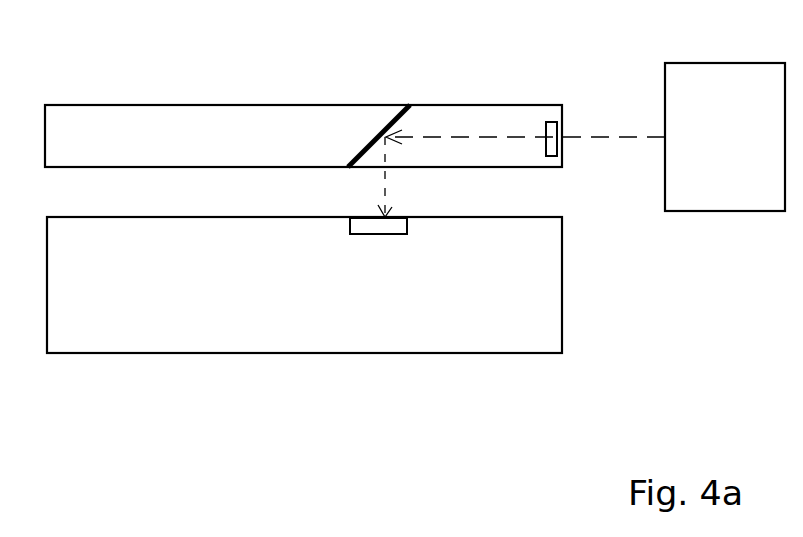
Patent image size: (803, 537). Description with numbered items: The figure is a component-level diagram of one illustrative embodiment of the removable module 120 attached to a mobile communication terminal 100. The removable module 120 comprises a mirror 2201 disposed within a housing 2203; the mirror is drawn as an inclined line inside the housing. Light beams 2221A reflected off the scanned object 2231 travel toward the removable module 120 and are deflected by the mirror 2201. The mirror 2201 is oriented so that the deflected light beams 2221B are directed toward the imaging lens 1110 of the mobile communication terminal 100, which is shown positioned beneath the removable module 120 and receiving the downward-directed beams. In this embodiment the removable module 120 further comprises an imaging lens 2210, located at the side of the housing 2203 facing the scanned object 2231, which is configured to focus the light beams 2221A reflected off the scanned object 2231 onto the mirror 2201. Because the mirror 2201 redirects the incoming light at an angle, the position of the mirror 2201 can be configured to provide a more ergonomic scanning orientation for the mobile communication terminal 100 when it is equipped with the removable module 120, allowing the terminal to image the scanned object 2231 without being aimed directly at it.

The housing 2203 is at (289, 104).
The removable module 120 is at (303, 136).
The mobile communication terminal 100 is at (304, 285).
The imaging lens 1110 is at (377, 235).
The mirror 2201 is at (371, 140).
The imaging lens 2210 is at (556, 123).
The scanned object 2231 is at (725, 137).
The light beams 2221A is at (608, 138).
The deflected light beams 2221B is at (328, 177).